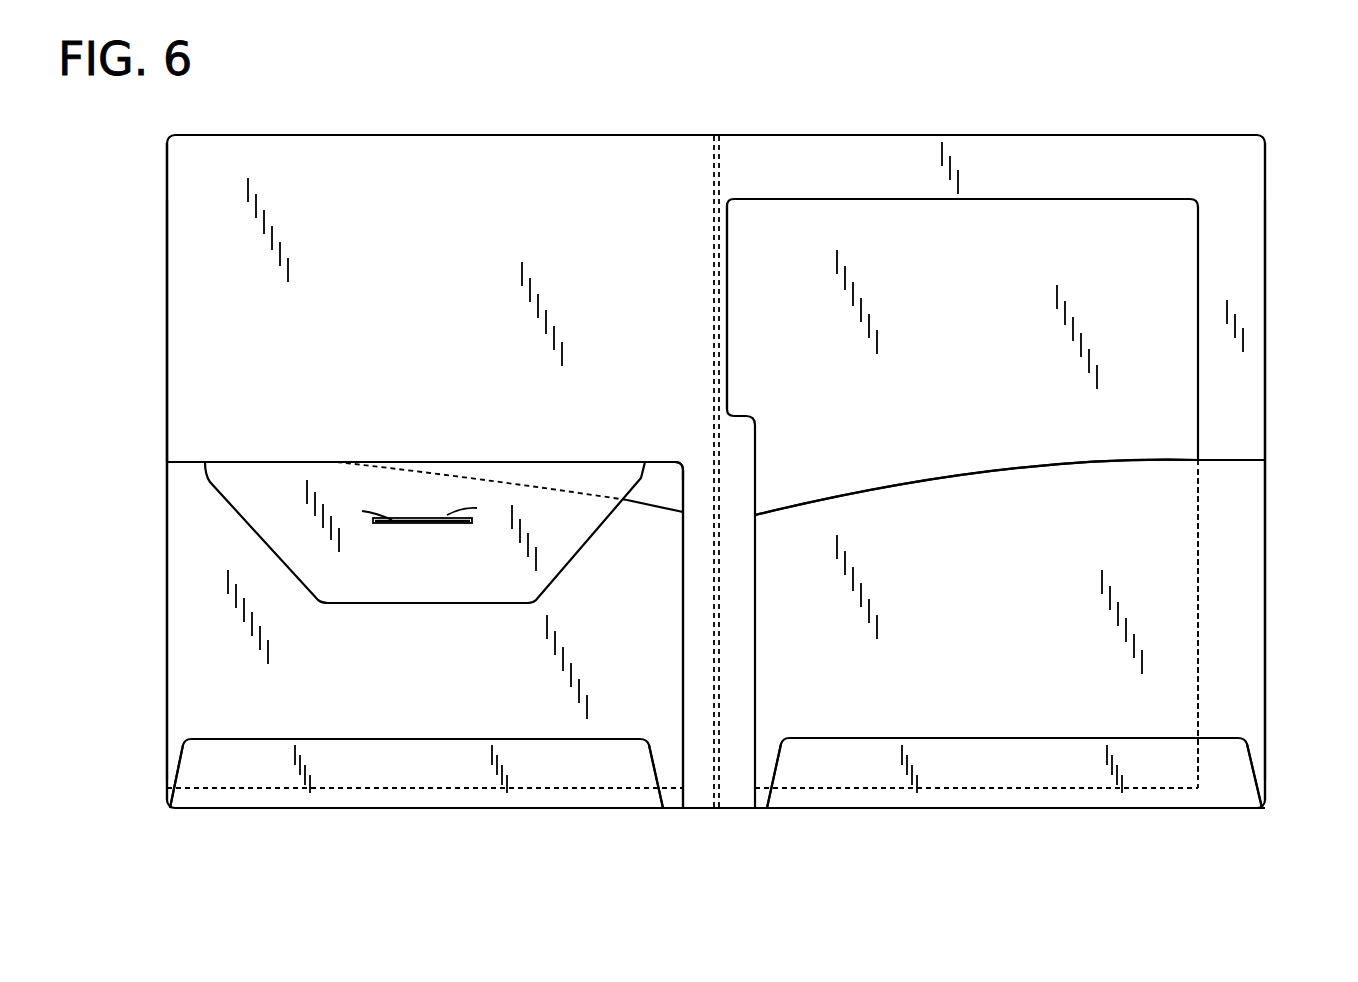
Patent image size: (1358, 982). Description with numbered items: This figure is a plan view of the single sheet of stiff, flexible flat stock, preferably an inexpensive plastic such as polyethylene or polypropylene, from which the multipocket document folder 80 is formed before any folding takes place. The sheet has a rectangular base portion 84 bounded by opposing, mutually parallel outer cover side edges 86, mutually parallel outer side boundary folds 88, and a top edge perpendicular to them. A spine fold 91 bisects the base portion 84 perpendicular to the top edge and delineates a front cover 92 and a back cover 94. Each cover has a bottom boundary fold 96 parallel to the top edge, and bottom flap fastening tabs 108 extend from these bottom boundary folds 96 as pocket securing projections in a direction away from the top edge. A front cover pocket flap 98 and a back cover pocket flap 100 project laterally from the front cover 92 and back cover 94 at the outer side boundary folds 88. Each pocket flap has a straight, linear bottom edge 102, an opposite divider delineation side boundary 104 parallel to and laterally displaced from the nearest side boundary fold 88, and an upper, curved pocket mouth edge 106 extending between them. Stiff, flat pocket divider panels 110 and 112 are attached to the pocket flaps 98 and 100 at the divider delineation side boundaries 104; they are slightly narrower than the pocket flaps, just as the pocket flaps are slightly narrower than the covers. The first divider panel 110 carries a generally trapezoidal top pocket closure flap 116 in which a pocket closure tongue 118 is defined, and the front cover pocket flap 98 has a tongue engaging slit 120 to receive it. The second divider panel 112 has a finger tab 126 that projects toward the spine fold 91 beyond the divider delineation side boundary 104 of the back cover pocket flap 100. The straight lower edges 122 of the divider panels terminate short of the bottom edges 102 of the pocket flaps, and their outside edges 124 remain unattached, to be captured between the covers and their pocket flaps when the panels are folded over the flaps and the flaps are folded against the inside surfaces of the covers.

The multipocket document folder 80 is at (584, 102).
The rectangular base portion 84 is at (166, 300).
The outer cover side edges 86 is at (1267, 237).
The outer side boundary folds 88 is at (166, 618).
The spine fold 91 is at (717, 335).
The front cover 92 is at (405, 320).
The back cover 94 is at (1035, 165).
The bottom boundary fold 96 is at (275, 815).
The front cover pocket flap 98 is at (436, 714).
The back cover pocket flap 100 is at (1040, 668).
The bottom edge 102 is at (672, 815).
The divider delineation side boundary 104 is at (688, 598).
The curved pocket mouth edge 106 is at (950, 475).
The bottom flap fastening tabs 108 is at (355, 765).
The pocket divider panel 110 is at (663, 472).
The pocket divider panel 112 is at (990, 347).
The top pocket closure flap 116 is at (367, 578).
The pocket closure tongue 118 is at (414, 510).
The tongue engaging slit 120 is at (388, 513).
The lower edges 122 is at (553, 815).
The outside edges 124 is at (1198, 413).
The finger tab 126 is at (743, 278).